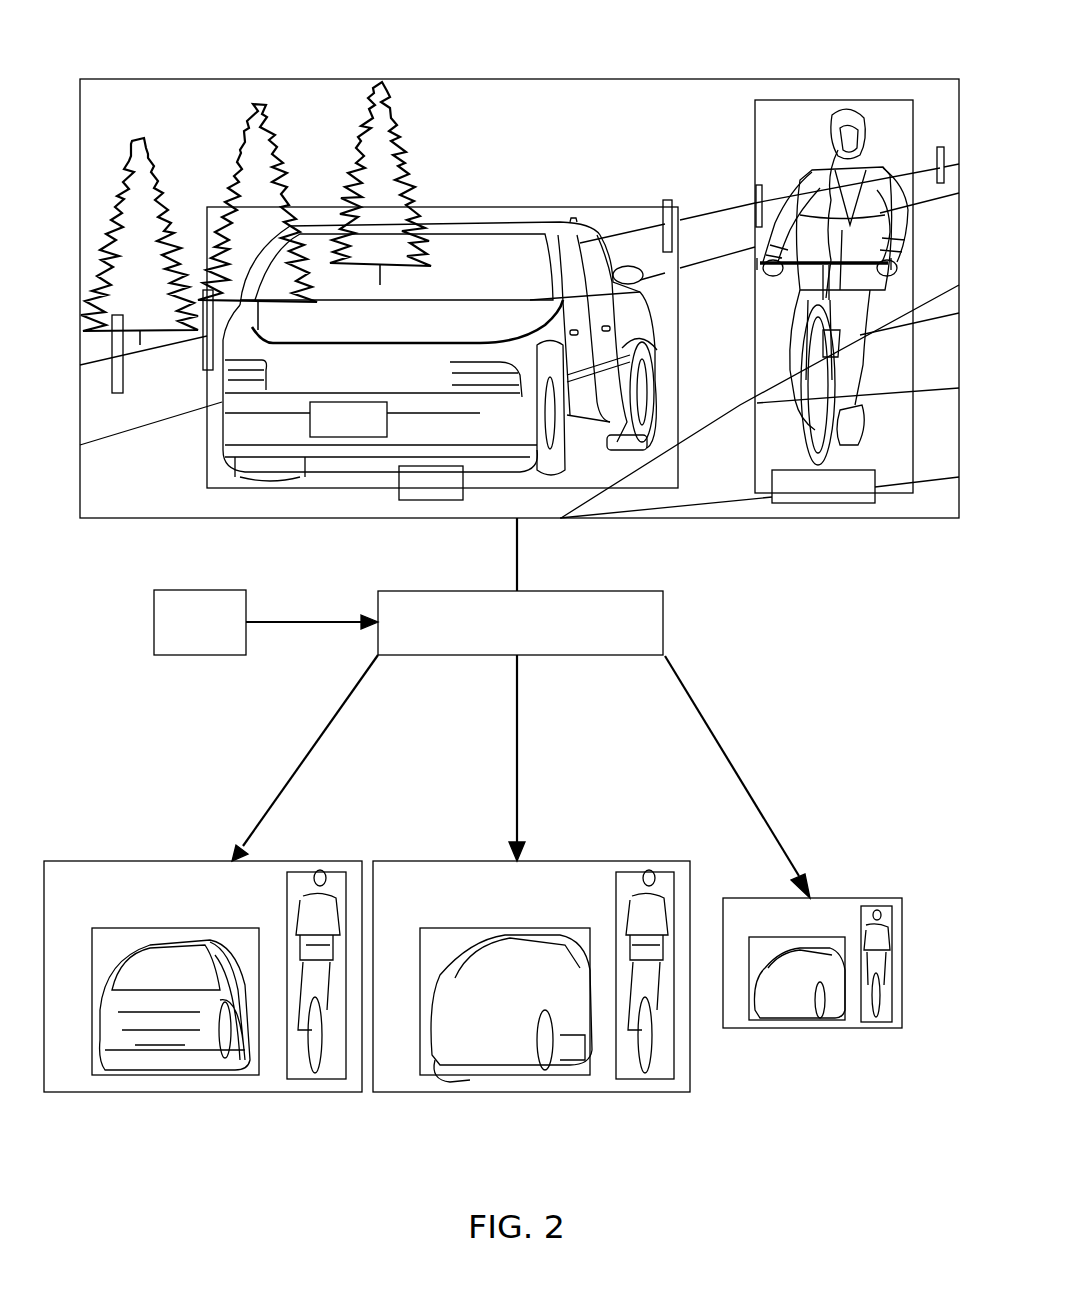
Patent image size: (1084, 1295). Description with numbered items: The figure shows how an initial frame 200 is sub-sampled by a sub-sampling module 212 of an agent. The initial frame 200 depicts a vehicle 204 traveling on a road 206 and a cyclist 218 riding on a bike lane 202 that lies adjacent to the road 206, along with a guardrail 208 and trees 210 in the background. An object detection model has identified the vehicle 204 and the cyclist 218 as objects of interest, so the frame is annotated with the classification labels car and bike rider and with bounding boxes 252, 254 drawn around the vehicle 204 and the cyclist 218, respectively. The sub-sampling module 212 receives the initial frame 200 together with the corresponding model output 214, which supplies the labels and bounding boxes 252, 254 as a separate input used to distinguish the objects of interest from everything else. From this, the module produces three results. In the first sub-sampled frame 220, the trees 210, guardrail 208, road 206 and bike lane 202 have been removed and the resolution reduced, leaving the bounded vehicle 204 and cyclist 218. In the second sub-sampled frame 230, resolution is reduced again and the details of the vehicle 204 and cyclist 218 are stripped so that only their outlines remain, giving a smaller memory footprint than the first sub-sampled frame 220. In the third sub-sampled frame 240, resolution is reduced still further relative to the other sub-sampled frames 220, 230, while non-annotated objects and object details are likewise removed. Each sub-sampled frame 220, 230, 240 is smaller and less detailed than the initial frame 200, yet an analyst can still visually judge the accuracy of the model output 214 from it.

The initial frame 200 is at (680, 79).
The bike lane 202 is at (740, 500).
The vehicle 204 is at (485, 220).
The road 206 is at (707, 358).
The guardrail 208 is at (203, 353).
The trees 210 is at (425, 142).
The sub-sampling module 212 is at (663, 610).
The model output 214 is at (247, 610).
The cyclist 218 is at (802, 183).
The first sub-sampled frame 220 is at (140, 860).
The second sub-sampled frame 230 is at (435, 860).
The third sub-sampled frame 240 is at (893, 898).
The bounding box 252 is at (552, 207).
The bounding box 254 is at (755, 122).